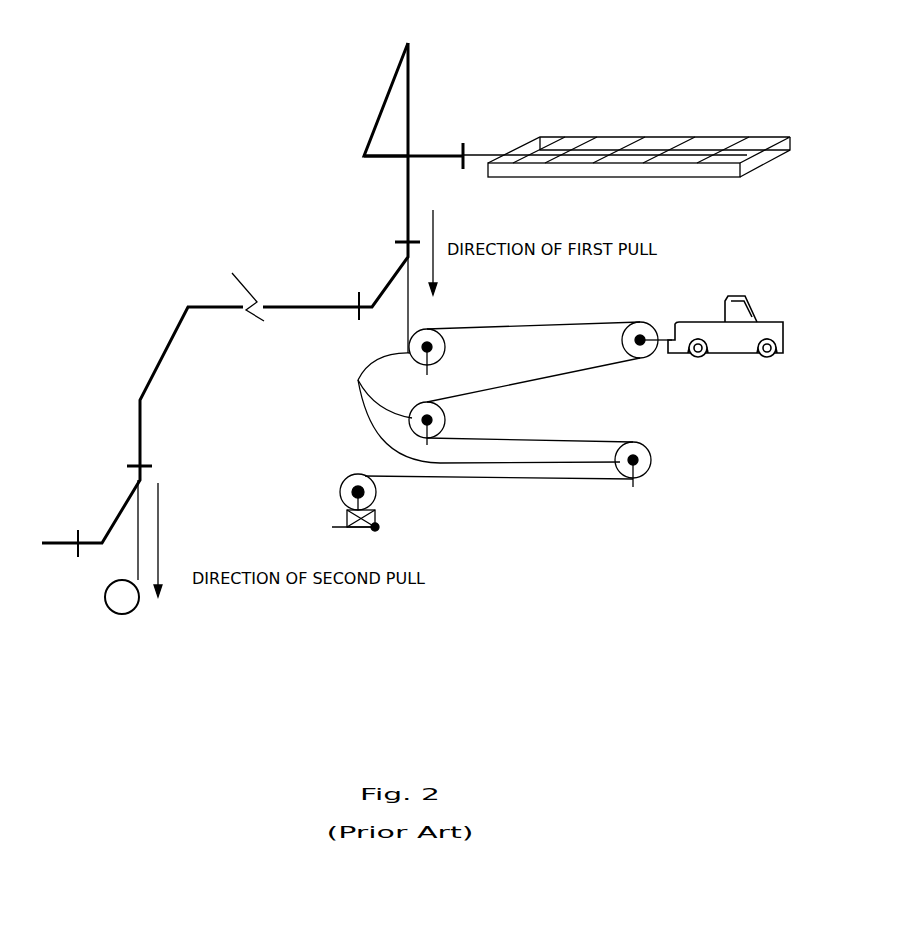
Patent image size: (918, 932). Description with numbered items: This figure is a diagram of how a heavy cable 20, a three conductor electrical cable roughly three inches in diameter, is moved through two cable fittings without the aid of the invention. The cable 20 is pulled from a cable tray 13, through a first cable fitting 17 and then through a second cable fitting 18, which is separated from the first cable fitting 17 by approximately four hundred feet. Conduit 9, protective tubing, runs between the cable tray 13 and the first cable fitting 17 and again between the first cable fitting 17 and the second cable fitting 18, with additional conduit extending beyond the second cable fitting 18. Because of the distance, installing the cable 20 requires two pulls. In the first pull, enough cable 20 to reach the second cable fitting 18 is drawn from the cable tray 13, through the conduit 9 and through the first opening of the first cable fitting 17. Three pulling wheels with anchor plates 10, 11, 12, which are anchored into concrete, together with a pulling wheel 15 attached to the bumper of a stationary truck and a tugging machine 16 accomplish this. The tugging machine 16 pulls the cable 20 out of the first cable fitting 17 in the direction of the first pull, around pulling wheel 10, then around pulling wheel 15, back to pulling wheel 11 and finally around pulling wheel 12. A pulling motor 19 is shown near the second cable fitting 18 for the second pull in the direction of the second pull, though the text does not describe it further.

The conduit 9 is at (420, 156).
The cable 20 is at (488, 153).
The cable tray 13 is at (639, 135).
The first cable fitting 17 is at (388, 277).
The second cable fitting 18 is at (115, 512).
The pulling wheel with anchor plate 10 is at (310, 377).
The pulling wheel with anchor plate 11 is at (419, 418).
The pulling wheel with anchor plate 12 is at (621, 464).
The pulling wheel 15 is at (652, 355).
The tugging machine 16 is at (376, 498).
The pulling motor 19 is at (118, 616).